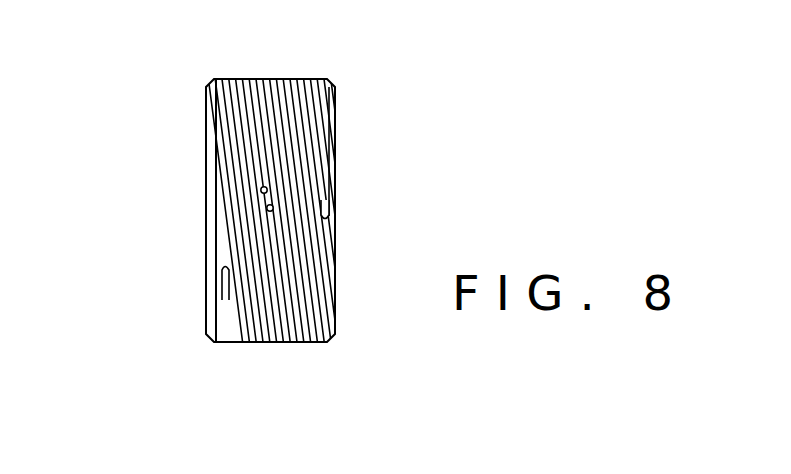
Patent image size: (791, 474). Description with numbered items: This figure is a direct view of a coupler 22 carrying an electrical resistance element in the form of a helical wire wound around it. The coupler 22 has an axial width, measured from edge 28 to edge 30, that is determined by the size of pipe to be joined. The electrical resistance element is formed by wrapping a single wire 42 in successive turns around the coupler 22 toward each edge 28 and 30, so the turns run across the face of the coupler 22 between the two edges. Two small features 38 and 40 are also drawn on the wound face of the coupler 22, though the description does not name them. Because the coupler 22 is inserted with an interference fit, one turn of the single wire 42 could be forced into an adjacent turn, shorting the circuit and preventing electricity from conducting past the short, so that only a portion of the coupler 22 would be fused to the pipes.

The coupler 22 is at (262, 72).
The single wire 42 is at (300, 121).
The aperture 38 is at (282, 186).
The aperture 40 is at (290, 209).
The edge 30 is at (200, 346).
The edge 28 is at (343, 345).